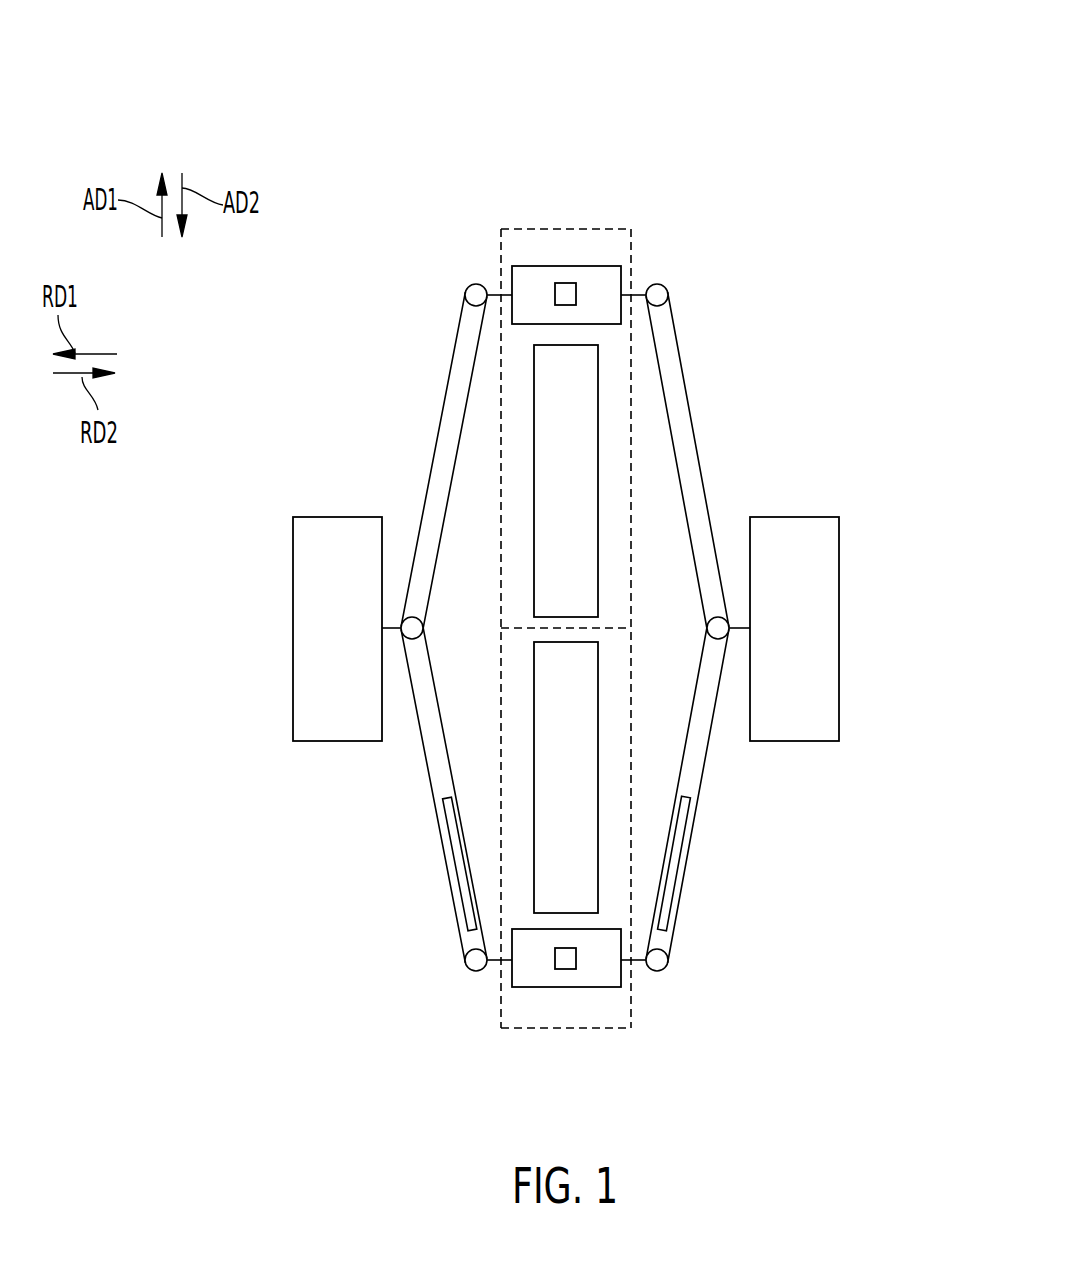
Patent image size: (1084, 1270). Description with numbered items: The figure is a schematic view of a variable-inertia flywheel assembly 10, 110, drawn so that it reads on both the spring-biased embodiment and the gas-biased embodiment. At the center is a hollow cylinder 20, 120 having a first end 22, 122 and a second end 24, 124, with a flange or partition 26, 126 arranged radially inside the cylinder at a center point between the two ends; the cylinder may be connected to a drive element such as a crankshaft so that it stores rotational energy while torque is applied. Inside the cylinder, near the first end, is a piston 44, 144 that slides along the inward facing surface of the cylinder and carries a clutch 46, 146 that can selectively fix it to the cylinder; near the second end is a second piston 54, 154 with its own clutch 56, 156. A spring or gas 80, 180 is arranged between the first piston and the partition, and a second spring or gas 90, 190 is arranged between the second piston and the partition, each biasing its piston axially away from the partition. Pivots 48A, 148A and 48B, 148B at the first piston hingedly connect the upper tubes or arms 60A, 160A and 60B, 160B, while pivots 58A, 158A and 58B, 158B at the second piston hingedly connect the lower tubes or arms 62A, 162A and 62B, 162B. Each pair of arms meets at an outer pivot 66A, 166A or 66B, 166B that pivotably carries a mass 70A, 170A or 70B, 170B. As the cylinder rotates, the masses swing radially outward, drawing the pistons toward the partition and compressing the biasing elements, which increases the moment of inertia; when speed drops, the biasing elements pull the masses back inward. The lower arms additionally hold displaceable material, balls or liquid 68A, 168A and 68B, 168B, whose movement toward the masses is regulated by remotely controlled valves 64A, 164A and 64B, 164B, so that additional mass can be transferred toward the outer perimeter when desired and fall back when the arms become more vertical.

The flywheel assembly 10 is at (285, 40).
The flywheel assembly 110 is at (318, 75).
The cylinder 20 is at (649, 628).
The cylinder 120 is at (632, 508).
The end 22 is at (574, 391).
The end 122 is at (603, 226).
The end 24 is at (576, 1066).
The end 124 is at (603, 1032).
The flange 26 is at (433, 538).
The partition 126 is at (517, 627).
The piston 44 is at (619, 273).
The piston 144 is at (608, 278).
The clutch 46 is at (529, 236).
The clutch 146 is at (566, 293).
The pivot 48A is at (428, 281).
The pivot 148A is at (473, 293).
The pivot 48B is at (704, 283).
The pivot 148B is at (660, 294).
The piston 54 is at (508, 985).
The piston 154 is at (512, 978).
The clutch 56 is at (634, 991).
The clutch 156 is at (565, 960).
The pivot 58A is at (428, 972).
The pivot 158A is at (475, 962).
The pivot 58B is at (703, 970).
The pivot 158B is at (660, 960).
The tube 60A is at (402, 461).
The tube 160A is at (443, 410).
The tube 60B is at (729, 461).
The tube 160B is at (690, 397).
The tube 62A is at (350, 794).
The tube 162A is at (423, 757).
The tube 62B is at (742, 794).
The tube 162B is at (712, 745).
The valve 64A is at (358, 810).
The valve 164A is at (448, 763).
The valve 64B is at (757, 795).
The valve 164B is at (690, 768).
The pivot 66A is at (299, 586).
The pivot 166A is at (402, 627).
The pivot 66B is at (834, 570).
The pivot 166B is at (730, 627).
The balls 68A is at (402, 864).
The liquid 168A is at (452, 863).
The balls 68B is at (729, 863).
The liquid 168B is at (672, 895).
The mass 70A is at (281, 629).
The mass 170A is at (305, 648).
The mass 70B is at (850, 629).
The mass 170B is at (825, 640).
The spring 80 is at (473, 481).
The gas 180 is at (552, 460).
The spring 90 is at (425, 777).
The gas 190 is at (550, 723).